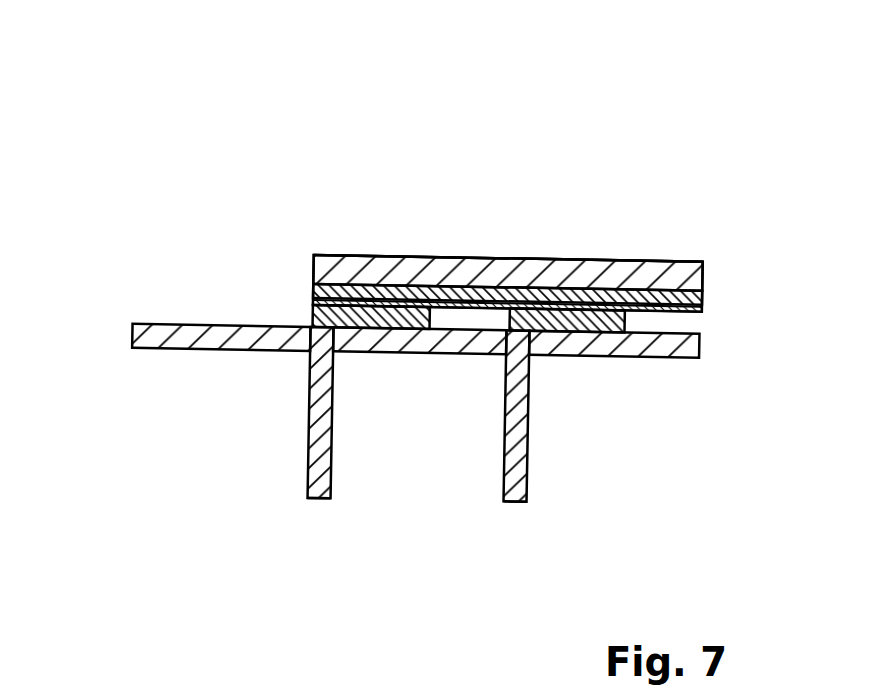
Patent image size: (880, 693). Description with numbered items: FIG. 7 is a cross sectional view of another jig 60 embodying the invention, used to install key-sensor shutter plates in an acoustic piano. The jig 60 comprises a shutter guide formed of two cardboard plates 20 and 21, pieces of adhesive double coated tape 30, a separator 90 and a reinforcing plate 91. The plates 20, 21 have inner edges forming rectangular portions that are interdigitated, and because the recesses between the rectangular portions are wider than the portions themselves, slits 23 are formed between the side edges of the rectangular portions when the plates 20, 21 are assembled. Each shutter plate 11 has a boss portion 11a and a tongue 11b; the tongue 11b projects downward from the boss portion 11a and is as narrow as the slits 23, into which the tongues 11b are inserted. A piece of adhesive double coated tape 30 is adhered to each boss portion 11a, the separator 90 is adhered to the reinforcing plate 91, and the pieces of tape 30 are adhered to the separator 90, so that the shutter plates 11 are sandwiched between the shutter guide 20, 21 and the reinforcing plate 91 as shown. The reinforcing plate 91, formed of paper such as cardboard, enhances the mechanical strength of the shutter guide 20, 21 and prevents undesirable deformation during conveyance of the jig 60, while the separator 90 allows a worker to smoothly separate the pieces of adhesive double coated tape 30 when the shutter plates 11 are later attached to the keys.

The jig 60 is at (686, 118).
The separator 90 is at (593, 258).
The reinforcing plate 91 is at (458, 258).
The boss portion 11a is at (635, 258).
The shutter plate 11 is at (282, 310).
The pieces of adhesive double coated tape 30 is at (312, 303).
The plate 20 is at (160, 346).
The plate 21 is at (445, 348).
The slits 23 is at (310, 377).
The tongue 11b is at (333, 472).